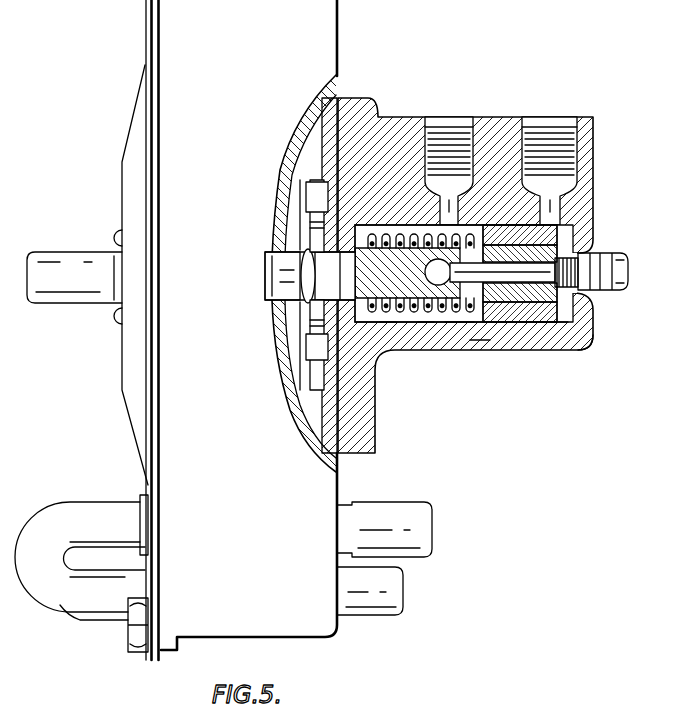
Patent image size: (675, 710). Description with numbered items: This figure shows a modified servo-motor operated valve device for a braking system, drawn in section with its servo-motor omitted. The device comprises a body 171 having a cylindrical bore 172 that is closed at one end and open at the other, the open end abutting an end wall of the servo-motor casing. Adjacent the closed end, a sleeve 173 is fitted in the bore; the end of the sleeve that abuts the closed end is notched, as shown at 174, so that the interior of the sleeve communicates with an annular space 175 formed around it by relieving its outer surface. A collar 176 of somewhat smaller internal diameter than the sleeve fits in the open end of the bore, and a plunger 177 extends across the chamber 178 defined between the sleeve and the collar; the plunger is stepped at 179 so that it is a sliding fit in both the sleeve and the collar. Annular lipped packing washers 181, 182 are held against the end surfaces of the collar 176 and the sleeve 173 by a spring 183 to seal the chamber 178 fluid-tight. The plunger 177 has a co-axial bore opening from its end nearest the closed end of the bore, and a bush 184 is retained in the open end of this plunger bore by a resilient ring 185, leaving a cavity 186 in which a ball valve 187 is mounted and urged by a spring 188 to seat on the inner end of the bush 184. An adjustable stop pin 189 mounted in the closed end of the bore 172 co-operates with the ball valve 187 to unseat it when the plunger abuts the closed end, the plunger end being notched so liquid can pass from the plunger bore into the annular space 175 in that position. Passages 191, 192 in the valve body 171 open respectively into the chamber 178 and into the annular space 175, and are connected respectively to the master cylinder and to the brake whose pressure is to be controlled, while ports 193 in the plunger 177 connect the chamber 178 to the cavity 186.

The body 171 is at (480, 340).
The cylindrical bore 172 is at (425, 324).
The sleeve 173 is at (560, 324).
The notch 174 is at (570, 326).
The annular space 175 is at (562, 246).
The collar 176 is at (355, 226).
The plunger 177 is at (466, 324).
The chamber 178 is at (388, 324).
The step 179 is at (472, 228).
The annular lipped packing washer 181 is at (300, 398).
The annular lipped packing washer 182 is at (528, 312).
The spring 183 is at (403, 228).
The bush 184 is at (535, 325).
The resilient ring 185 is at (585, 252).
The cavity 186 is at (390, 232).
The ball valve 187 is at (452, 324).
The spring 188 is at (412, 273).
The adjustable stop pin 189 is at (574, 300).
The passage 191 is at (445, 150).
The passage 192 is at (550, 140).
The ports 193 is at (283, 335).